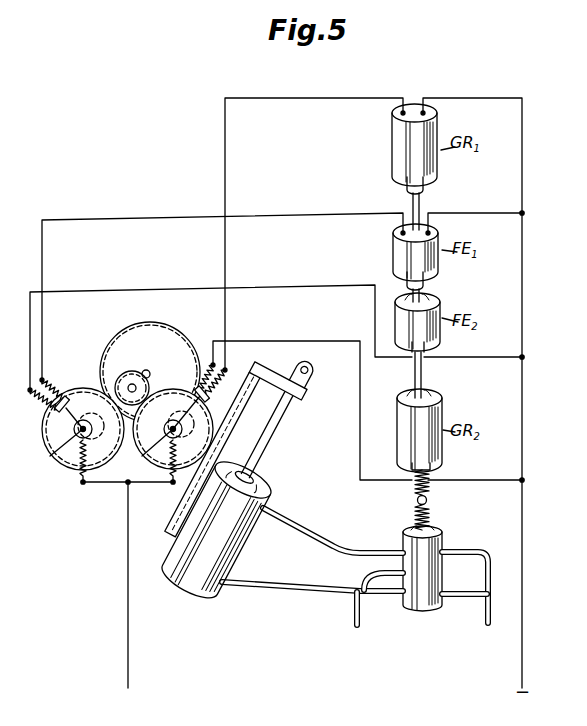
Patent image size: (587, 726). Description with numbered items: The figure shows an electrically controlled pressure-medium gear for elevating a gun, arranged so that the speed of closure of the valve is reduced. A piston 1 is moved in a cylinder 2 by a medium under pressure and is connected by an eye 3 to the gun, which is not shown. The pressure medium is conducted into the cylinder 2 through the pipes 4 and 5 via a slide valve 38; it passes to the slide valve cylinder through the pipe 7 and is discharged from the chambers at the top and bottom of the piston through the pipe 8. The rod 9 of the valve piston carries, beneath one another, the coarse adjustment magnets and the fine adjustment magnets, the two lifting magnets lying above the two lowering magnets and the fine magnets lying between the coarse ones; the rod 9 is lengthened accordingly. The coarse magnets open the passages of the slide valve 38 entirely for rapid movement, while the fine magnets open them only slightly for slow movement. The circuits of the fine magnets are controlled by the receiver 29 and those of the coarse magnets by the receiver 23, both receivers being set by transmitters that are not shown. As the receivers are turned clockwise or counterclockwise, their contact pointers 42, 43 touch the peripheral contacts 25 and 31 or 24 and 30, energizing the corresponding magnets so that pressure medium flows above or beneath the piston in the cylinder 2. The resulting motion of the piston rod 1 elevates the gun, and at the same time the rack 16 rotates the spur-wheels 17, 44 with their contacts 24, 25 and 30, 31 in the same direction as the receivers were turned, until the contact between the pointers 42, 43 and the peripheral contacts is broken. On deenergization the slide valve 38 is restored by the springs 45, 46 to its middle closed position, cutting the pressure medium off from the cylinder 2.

The piston 1 is at (278, 440).
The cylinder 2 is at (226, 535).
The eye 3 is at (316, 370).
The pipe 4 is at (305, 524).
The pipe 5 is at (298, 588).
The pipe 7 is at (361, 613).
The pipe 8 is at (485, 613).
The valve rod 9 is at (430, 509).
The rack 16 is at (227, 462).
The spur-wheel 17 is at (165, 480).
The receiver 23 is at (128, 481).
The peripheral contact 24 is at (203, 385).
The peripheral contact 25 is at (211, 392).
The receiver 29 is at (58, 447).
The peripheral contact 30 is at (46, 411).
The peripheral contact 31 is at (62, 399).
The slide valve 38 is at (443, 572).
The contact pointer 42 is at (178, 402).
The contact pointer 43 is at (77, 398).
The spur-wheel 44 is at (72, 472).
The spring 45 is at (410, 490).
The spring 46 is at (417, 504).